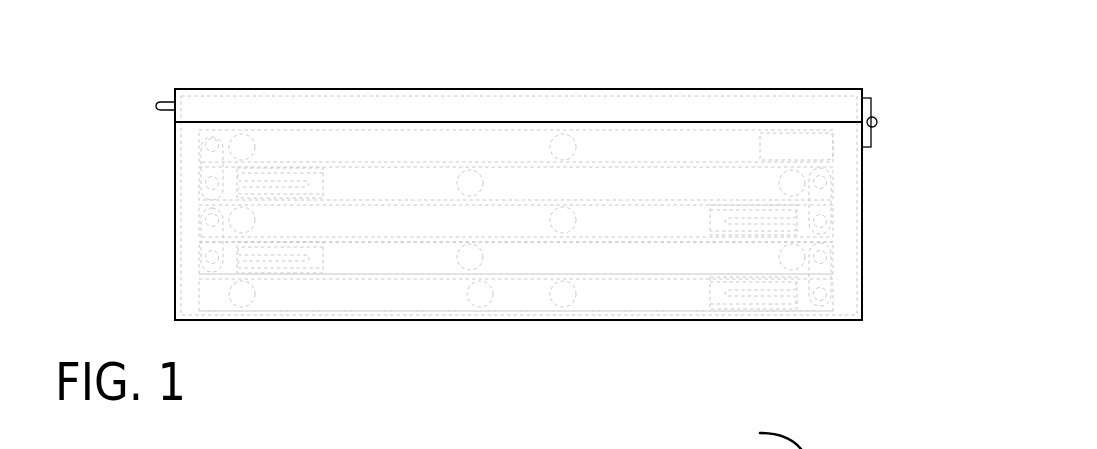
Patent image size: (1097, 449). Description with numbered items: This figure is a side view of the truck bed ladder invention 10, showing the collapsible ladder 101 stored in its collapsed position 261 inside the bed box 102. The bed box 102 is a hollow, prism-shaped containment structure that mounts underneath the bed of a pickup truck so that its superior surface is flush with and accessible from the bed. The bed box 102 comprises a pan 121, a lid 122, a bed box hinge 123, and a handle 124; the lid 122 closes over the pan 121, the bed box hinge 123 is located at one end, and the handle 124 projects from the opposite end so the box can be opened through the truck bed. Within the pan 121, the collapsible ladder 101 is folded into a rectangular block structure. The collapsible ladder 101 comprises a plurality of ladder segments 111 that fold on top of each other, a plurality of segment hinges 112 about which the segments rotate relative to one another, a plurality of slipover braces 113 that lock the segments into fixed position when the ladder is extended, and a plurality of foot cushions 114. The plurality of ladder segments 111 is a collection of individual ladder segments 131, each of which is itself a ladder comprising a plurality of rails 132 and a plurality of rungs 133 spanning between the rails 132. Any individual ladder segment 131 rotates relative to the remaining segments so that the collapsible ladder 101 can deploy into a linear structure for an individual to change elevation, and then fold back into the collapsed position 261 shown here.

The electronic device 10 is at (110, 106).
The collapsed position 261 is at (297, 70).
The lid 122 is at (413, 105).
The bed box 102 is at (865, 190).
The pan 121 is at (852, 302).
The individual ladder segment 131 is at (421, 338).
The bed box hinge 123 is at (872, 116).
The handle 124 is at (166, 107).
The collapsible ladder 101 is at (612, 145).
The plurality of ladder segments 111 is at (643, 258).
The foot cushion 114 is at (775, 143).
The segment hinge 112 is at (825, 205).
The slipover brace 113 is at (318, 255).
The rail 132 is at (480, 297).
The rung 133 is at (242, 297).